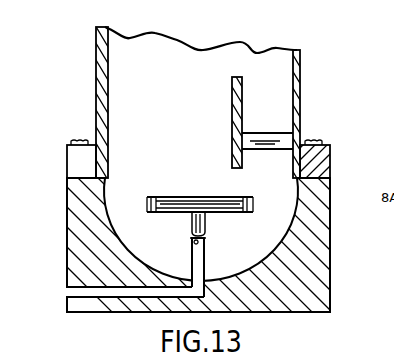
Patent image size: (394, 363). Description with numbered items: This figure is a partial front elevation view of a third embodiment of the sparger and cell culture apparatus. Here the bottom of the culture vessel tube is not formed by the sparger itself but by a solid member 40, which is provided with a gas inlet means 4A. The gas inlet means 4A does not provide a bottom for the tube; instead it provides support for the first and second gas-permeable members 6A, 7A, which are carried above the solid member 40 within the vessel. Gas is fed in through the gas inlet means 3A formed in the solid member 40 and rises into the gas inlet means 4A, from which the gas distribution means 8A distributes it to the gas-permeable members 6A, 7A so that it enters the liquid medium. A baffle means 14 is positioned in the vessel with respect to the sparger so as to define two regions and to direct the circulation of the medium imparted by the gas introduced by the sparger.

The solid member 40 is at (322, 257).
The gas inlet means 3A is at (76, 293).
The gas inlet means 4A is at (237, 216).
The first gas-permeable member 6A is at (252, 211).
The second gas-permeable member 7A is at (233, 197).
The gas distribution means 8A is at (146, 201).
The baffle means 14 is at (235, 82).